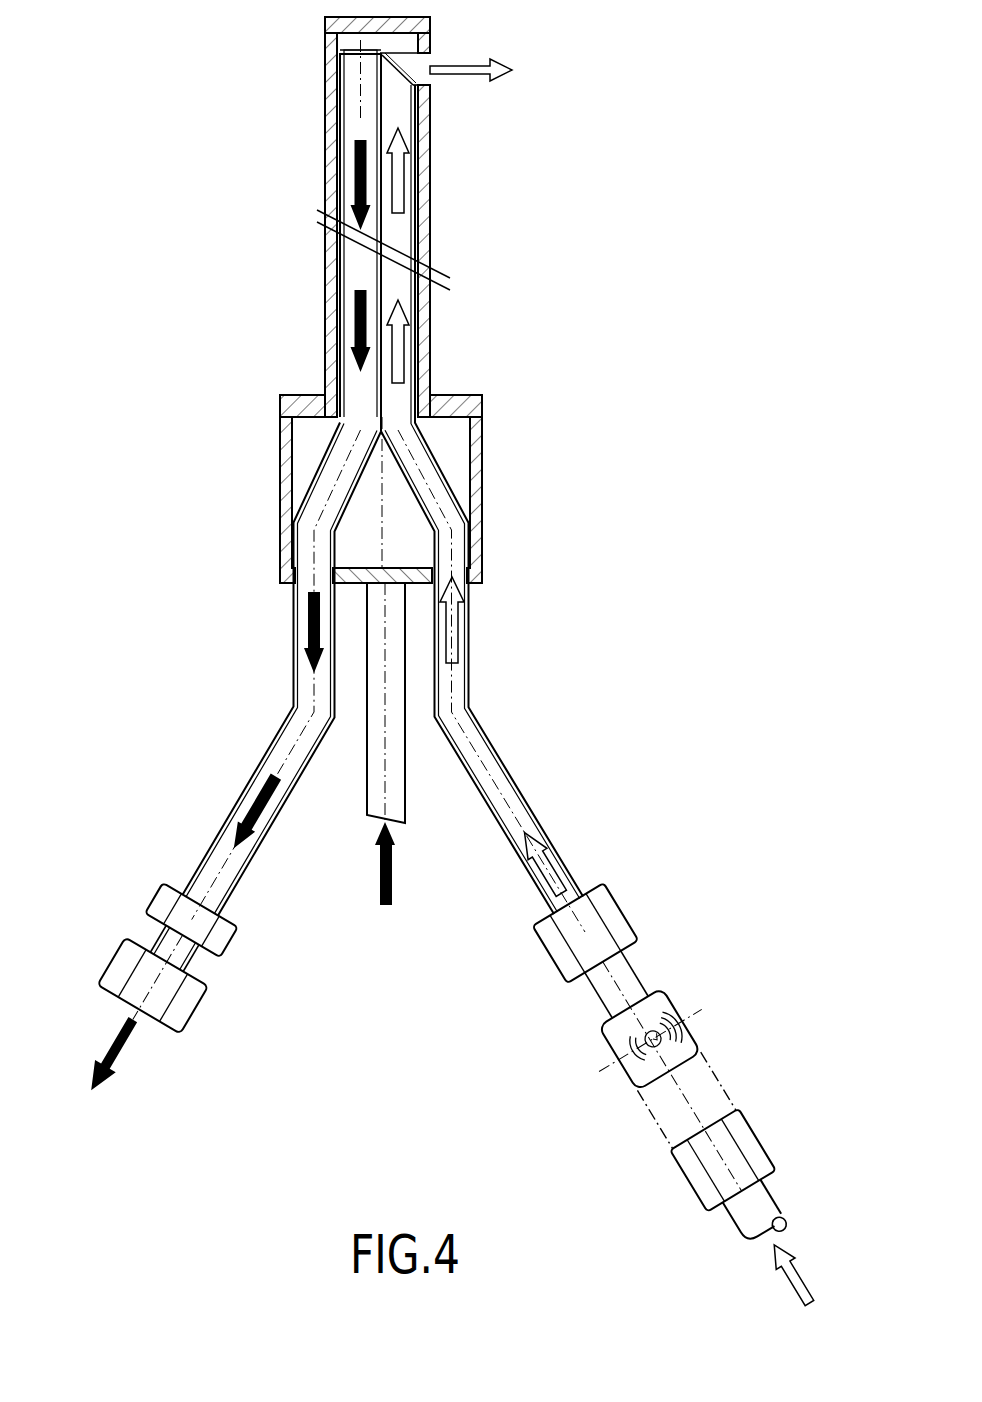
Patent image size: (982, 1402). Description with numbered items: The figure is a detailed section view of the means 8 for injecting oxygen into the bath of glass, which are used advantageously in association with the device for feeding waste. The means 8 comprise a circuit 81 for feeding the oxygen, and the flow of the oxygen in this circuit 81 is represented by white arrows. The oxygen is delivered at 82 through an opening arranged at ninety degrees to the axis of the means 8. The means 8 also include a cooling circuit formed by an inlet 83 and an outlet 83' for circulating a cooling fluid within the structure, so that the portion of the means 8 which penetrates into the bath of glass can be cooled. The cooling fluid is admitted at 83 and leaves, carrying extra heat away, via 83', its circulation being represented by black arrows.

The means for injecting oxygen 8 is at (522, 311).
The circuit for feeding oxygen 81 is at (503, 768).
The oxygen delivery opening 82 is at (430, 60).
The cooling fluid admission 83 is at (361, 744).
The cooling fluid outlet 83' is at (215, 577).